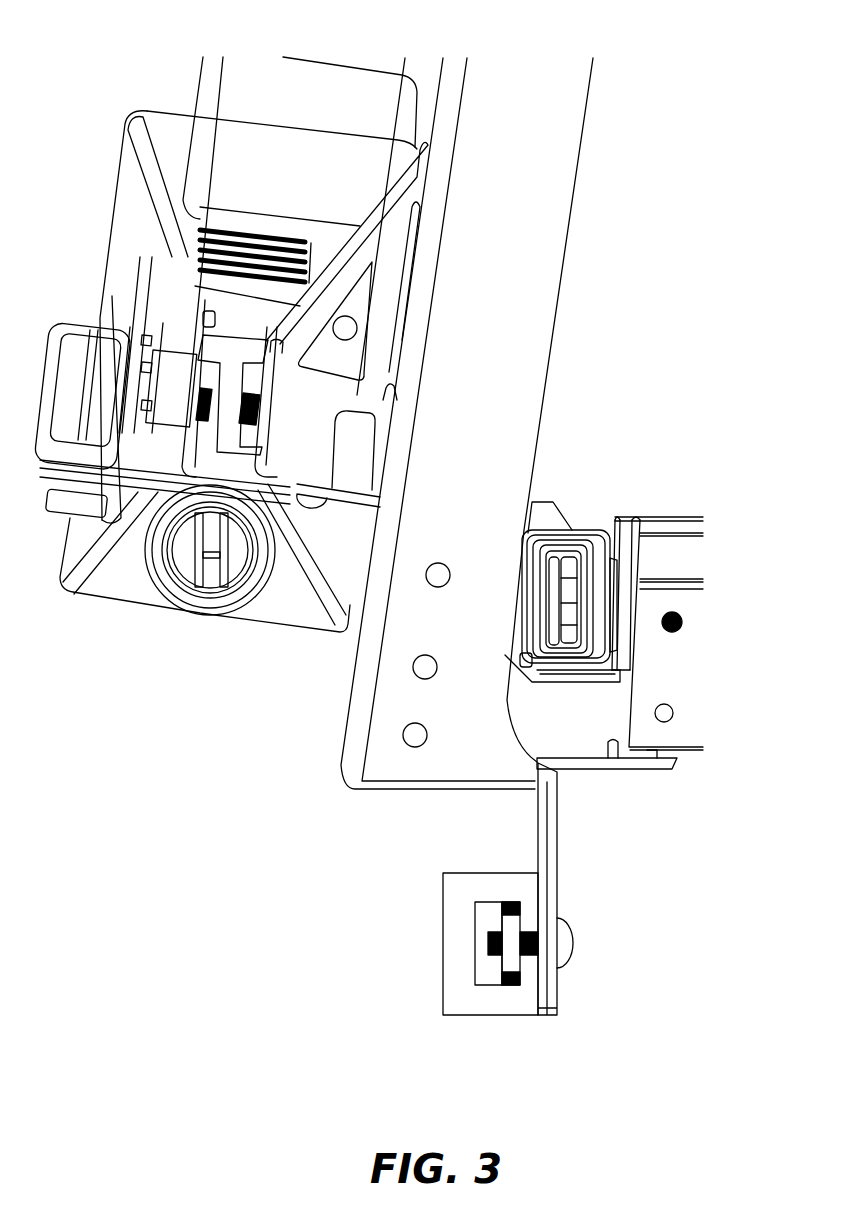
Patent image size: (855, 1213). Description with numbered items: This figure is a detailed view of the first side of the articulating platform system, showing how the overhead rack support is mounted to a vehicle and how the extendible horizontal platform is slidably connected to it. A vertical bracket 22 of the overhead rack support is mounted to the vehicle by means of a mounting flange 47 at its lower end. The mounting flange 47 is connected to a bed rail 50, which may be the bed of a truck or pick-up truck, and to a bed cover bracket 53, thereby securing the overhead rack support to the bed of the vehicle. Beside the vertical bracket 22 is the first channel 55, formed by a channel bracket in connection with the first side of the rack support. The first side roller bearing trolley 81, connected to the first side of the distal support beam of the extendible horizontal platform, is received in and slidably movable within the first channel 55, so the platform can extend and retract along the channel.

The vertical bracket 22 is at (392, 627).
The first channel 55 is at (534, 506).
The first side roller bearing trolley 81 is at (565, 555).
The bed cover bracket 53 is at (650, 755).
The mounting flange 47 is at (547, 835).
The bed rail 50 is at (443, 910).